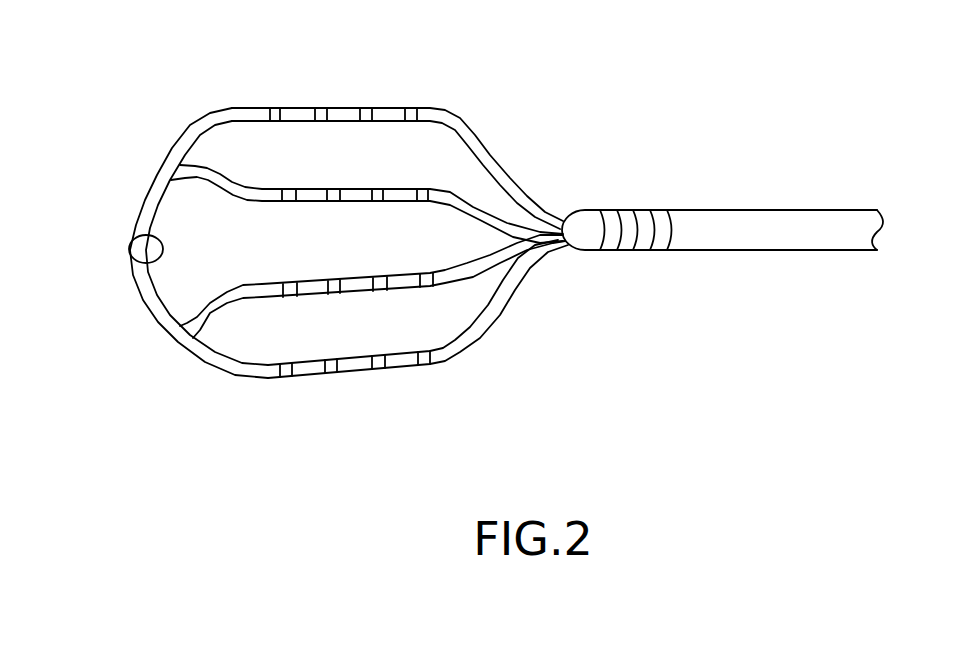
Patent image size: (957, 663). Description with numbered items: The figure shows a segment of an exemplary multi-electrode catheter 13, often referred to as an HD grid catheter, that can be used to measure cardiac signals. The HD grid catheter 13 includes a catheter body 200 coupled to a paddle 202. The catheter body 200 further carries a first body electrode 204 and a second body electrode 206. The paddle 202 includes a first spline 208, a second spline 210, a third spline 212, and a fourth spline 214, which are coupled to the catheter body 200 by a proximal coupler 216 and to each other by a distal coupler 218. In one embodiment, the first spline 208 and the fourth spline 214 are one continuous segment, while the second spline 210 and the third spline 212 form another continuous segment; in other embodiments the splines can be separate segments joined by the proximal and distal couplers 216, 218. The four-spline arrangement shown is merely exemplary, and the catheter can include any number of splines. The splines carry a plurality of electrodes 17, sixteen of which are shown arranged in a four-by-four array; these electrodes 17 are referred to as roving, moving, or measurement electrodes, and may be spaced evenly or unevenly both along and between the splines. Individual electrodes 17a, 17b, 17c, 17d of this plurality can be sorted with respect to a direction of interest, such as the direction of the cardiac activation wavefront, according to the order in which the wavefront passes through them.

The HD grid catheter 13 is at (843, 120).
The electrode 17 is at (284, 379).
The electrode 17a is at (276, 108).
The electrode 17b is at (321, 122).
The electrode 17c is at (283, 203).
The electrode 17d is at (331, 203).
The catheter body 200 is at (852, 242).
The paddle 202 is at (185, 100).
The first body electrode 204 is at (658, 217).
The second body electrode 206 is at (622, 217).
The first spline 208 is at (447, 118).
The second spline 210 is at (218, 180).
The third spline 212 is at (198, 325).
The fourth spline 214 is at (253, 376).
The proximal coupler 216 is at (579, 218).
The distal coupler 218 is at (148, 247).